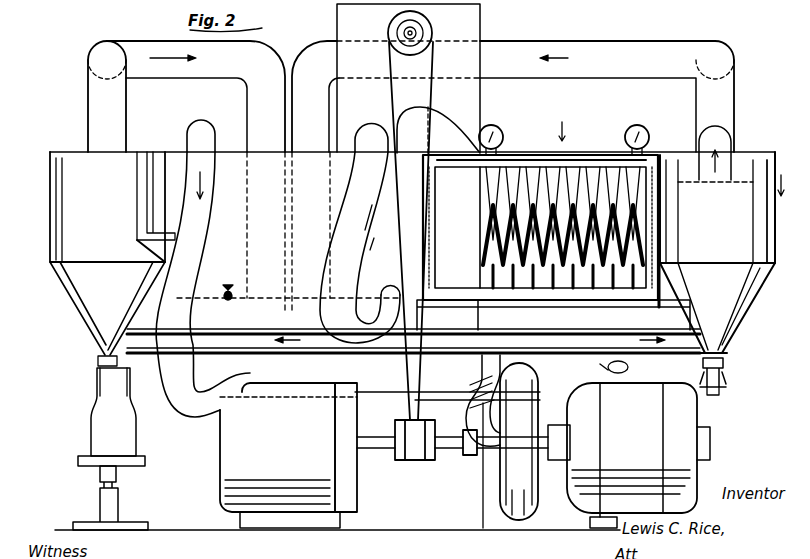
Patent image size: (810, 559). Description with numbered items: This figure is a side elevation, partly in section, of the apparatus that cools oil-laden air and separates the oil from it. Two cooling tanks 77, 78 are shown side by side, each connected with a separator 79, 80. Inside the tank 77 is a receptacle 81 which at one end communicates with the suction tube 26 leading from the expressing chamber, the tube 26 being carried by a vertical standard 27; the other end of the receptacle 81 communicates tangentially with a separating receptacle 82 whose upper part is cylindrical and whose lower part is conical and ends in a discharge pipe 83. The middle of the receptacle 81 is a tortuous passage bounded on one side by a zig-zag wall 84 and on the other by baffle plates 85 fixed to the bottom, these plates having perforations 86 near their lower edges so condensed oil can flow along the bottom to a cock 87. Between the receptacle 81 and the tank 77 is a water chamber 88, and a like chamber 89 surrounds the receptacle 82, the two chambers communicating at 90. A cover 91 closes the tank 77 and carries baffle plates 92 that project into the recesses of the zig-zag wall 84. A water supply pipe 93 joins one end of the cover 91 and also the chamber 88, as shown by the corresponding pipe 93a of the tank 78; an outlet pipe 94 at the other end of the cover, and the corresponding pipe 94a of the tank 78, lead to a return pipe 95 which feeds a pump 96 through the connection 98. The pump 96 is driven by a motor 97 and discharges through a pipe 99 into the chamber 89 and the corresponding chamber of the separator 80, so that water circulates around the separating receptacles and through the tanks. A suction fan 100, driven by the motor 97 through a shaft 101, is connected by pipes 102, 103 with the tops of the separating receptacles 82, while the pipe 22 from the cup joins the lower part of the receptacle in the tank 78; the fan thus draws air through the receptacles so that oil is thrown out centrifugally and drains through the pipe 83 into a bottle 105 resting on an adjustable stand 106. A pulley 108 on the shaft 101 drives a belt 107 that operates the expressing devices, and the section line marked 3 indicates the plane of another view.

The pipe 22 is at (392, 392).
The suction tube 26 is at (423, 100).
The vertical standard 27 is at (481, 5).
The section line 3 is at (669, 158).
The cooling tank 77 is at (568, 294).
The cooling tank 78 is at (240, 300).
The separator 79 is at (765, 265).
The separator 80 is at (112, 207).
The receptacle 81 is at (540, 227).
The separating receptacle 82 is at (742, 320).
The discharge pipe 83 is at (721, 388).
The zig-zag wall 84 is at (485, 258).
The baffle plates 85 is at (533, 300).
The perforations 86 is at (602, 293).
The cock 87 is at (234, 292).
The water chamber 88 is at (655, 300).
The water chamber 89 is at (756, 287).
The communication 90 is at (680, 220).
The cover 91 is at (530, 158).
The baffle plates 92 is at (512, 190).
The water supply pipe 93 is at (498, 127).
The water supply pipe 93a is at (336, 252).
The outlet pipe 94 is at (645, 130).
The outlet pipe 94a is at (208, 262).
The return pipe 95 is at (482, 362).
The pump 96 is at (538, 505).
The motor 97 is at (690, 428).
The connection 98 is at (466, 414).
The pipe 99 is at (413, 326).
The suction fan 100 is at (216, 443).
The shaft 101 is at (376, 456).
The pipe 102 is at (310, 48).
The pipe 103 is at (240, 73).
The bottle 105 is at (96, 410).
The adjustable stand 106 is at (78, 460).
The belt 107 is at (396, 65).
The pulley 108 is at (422, 462).